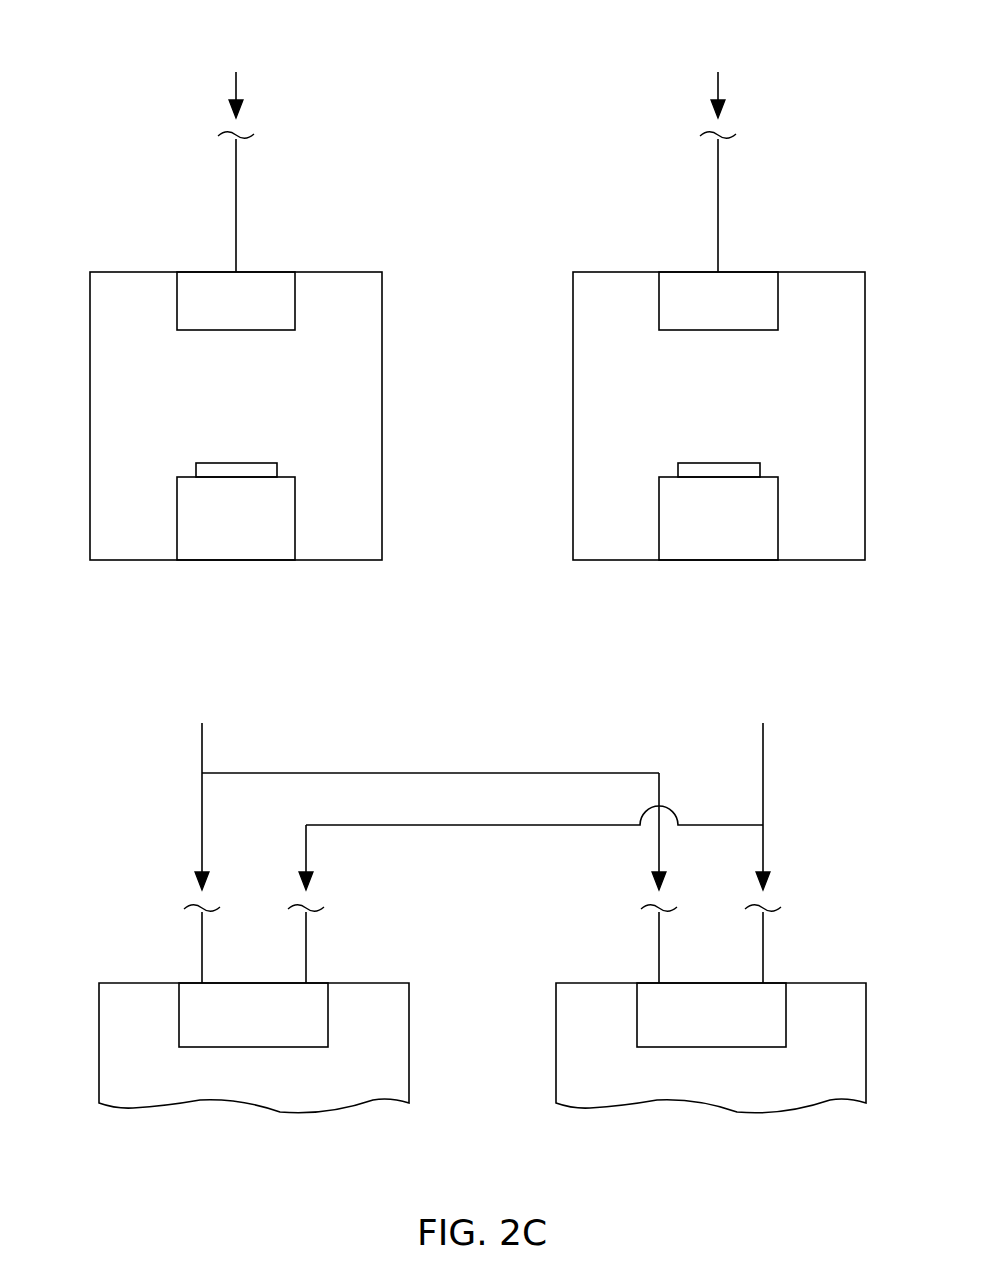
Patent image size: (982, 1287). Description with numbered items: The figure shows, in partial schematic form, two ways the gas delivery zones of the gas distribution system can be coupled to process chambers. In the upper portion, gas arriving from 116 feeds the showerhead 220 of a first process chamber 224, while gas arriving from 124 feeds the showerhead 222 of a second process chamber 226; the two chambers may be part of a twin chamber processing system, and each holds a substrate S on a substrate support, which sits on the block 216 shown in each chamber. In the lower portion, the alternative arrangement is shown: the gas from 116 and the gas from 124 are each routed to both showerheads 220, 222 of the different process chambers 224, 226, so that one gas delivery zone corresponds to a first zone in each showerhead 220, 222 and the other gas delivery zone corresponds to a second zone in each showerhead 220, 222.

The first signal source (from 116) 116 is at (422, 495).
The second signal source (from 124) 124 is at (544, 495).
The sample holder / lower block 216 is at (477, 518).
The showerhead 220 is at (252, 659).
The showerhead 222 is at (711, 659).
The first process chamber 224 is at (131, 271).
The second process chamber 226 is at (613, 271).
The substrate S is at (228, 463).